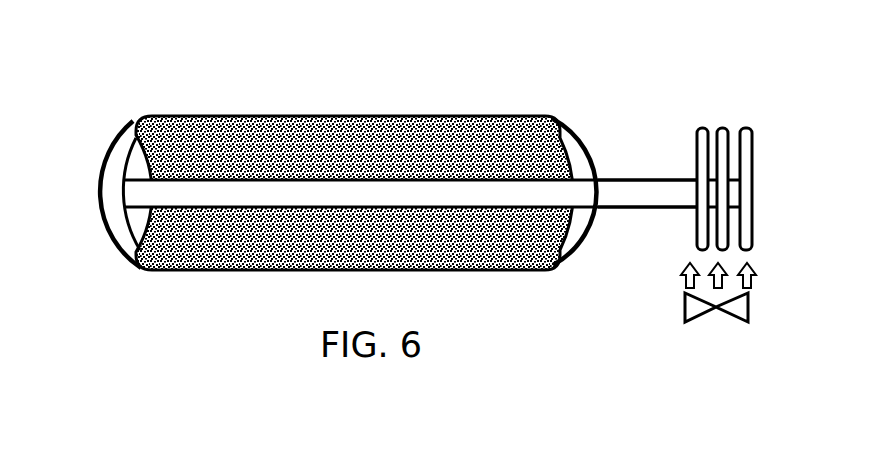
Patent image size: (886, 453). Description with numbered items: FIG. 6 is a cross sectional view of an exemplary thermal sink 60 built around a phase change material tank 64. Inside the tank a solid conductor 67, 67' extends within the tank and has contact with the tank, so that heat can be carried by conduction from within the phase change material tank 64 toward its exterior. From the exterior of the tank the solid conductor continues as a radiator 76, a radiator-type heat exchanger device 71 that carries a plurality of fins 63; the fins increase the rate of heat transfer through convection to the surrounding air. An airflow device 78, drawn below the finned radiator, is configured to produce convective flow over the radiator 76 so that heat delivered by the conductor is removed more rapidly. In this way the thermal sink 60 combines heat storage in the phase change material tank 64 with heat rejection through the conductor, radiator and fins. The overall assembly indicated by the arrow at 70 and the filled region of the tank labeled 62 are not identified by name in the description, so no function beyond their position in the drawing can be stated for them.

The sample container assembly 70 is at (357, 137).
The adsorbent packing material 62 is at (300, 140).
The phase change material tank 64 is at (168, 112).
The thermal sink 60 is at (535, 125).
The solid conductor 67 is at (368, 115).
The solid conductor 67' is at (79, 201).
The radiator 76 is at (635, 185).
The fins 63 is at (727, 130).
The heat exchanger device 71 is at (753, 130).
The airflow device 78 is at (687, 322).